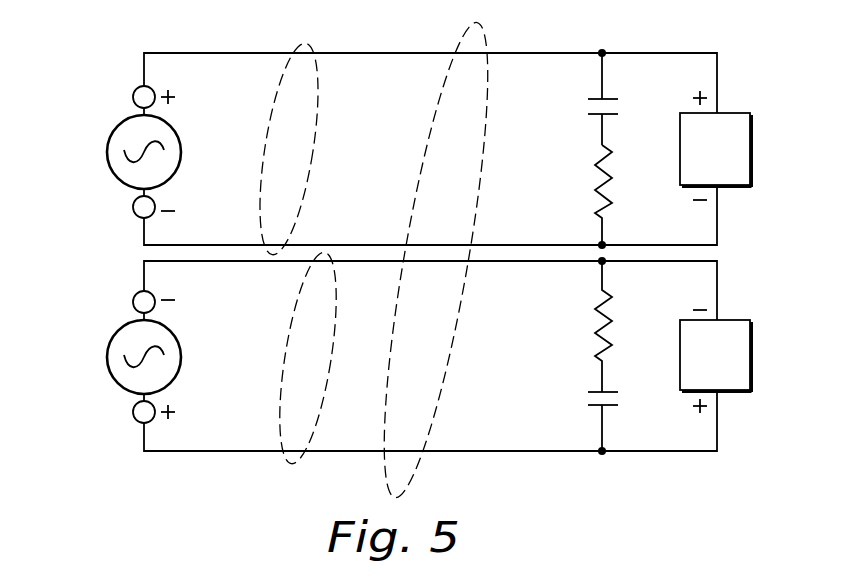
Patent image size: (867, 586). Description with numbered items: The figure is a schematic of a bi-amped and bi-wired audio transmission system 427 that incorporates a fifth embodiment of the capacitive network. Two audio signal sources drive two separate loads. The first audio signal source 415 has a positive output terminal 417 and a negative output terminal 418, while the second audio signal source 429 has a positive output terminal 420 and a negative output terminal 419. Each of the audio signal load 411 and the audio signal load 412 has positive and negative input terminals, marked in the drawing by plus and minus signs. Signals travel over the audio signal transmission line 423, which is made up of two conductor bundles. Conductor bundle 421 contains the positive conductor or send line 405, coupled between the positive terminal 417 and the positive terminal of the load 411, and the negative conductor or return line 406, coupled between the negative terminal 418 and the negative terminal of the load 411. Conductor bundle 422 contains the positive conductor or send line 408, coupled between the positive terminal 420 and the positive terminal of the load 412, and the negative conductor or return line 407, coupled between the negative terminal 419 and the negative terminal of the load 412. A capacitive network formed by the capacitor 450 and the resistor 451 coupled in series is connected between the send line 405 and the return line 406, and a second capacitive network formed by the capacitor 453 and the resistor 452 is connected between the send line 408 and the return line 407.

The positive conductor or send line 405 is at (506, 54).
The negative conductor or return line 406 is at (371, 245).
The negative conductor or return line 407 is at (488, 262).
The positive conductor or send line 408 is at (522, 451).
The audio signal load 411 is at (730, 187).
The audio signal load 412 is at (730, 392).
The audio signal source 415 is at (121, 183).
The positive output terminal 417 is at (133, 94).
The negative output terminal 418 is at (137, 215).
The negative output terminal 419 is at (133, 299).
The positive output terminal 420 is at (137, 420).
The conductor bundle 421 is at (279, 95).
The conductor bundle 422 is at (302, 292).
The audio signal transmission line 423 is at (461, 44).
The bi-amped and bi-wired audio transmission system 427 is at (738, 74).
The audio signal source 429 is at (121, 387).
The capacitor 450 is at (612, 99).
The resistor 451 is at (600, 183).
The resistor 452 is at (600, 318).
The capacitor 453 is at (588, 393).